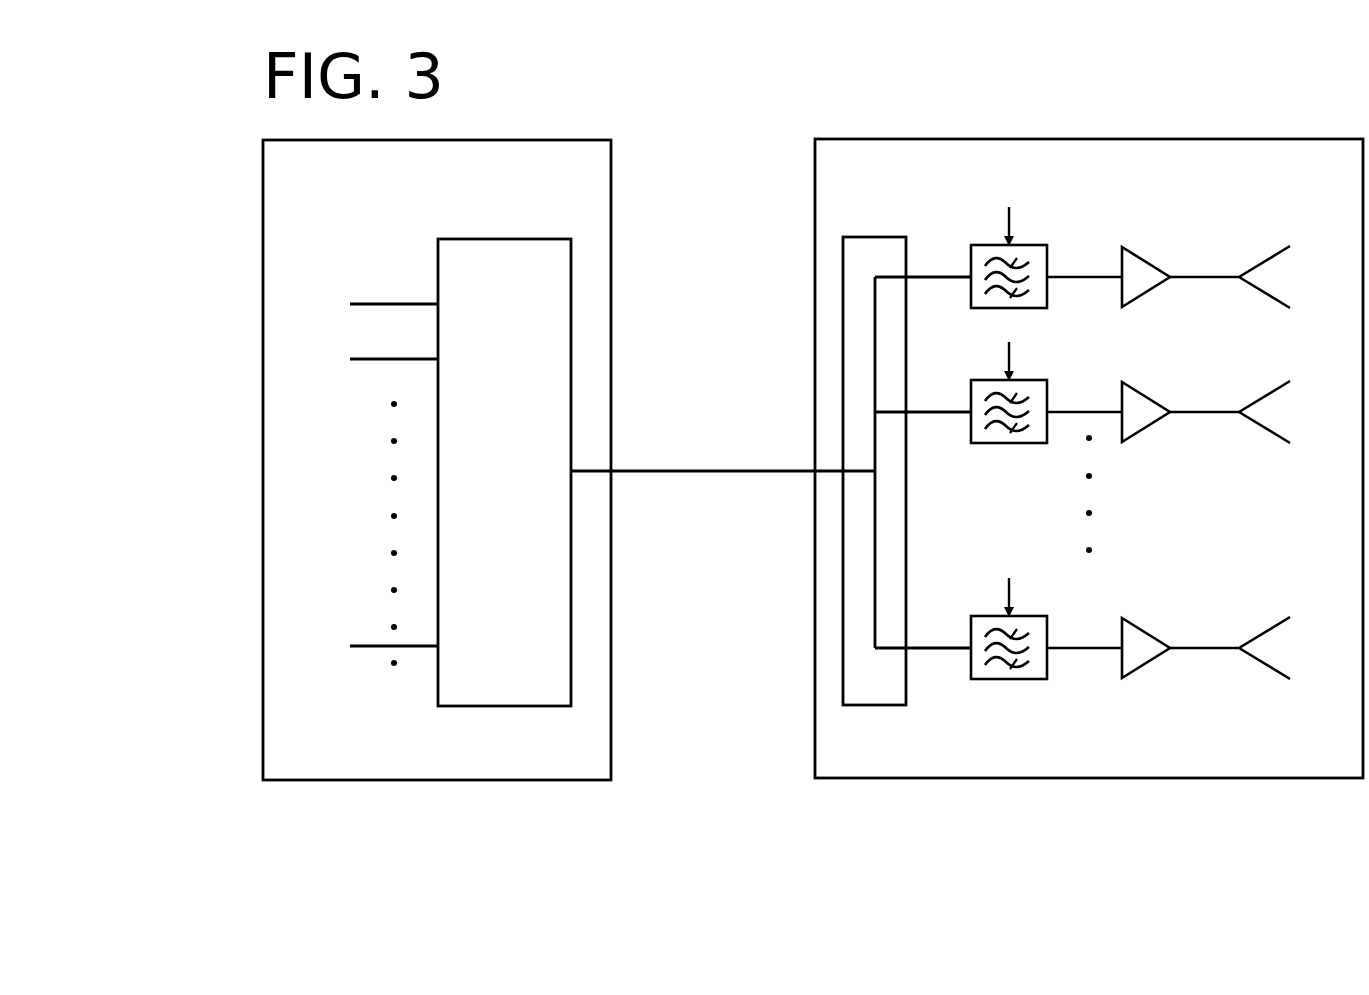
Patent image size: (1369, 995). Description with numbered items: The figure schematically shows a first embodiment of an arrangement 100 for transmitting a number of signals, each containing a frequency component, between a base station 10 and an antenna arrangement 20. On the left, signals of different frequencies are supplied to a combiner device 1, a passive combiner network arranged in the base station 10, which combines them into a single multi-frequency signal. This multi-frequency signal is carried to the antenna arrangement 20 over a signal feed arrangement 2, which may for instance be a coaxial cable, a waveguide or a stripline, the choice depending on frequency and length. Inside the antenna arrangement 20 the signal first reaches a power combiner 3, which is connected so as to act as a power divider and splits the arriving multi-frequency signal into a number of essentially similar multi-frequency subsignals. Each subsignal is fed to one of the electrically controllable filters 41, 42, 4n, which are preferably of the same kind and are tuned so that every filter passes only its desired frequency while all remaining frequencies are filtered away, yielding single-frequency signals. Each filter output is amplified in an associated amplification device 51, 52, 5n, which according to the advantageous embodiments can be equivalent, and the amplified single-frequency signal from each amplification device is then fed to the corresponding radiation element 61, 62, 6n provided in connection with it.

The combiner device 1 is at (508, 706).
The base station 10 is at (438, 780).
The signal feed arrangement 2 is at (716, 472).
The power combiner 3 is at (858, 237).
The antenna arrangement 20 is at (1058, 778).
The arrangement 100 is at (882, 110).
The electrically controllable filter 41 is at (1047, 258).
The electrically controllable filter 42 is at (1047, 393).
The electrically controllable filter 4n is at (1047, 629).
The amplification device 51 is at (1150, 262).
The amplification device 52 is at (1150, 397).
The amplification device 5n is at (1150, 633).
The radiation element 61 is at (1260, 304).
The radiation element 62 is at (1260, 439).
The radiation element 6n is at (1260, 675).